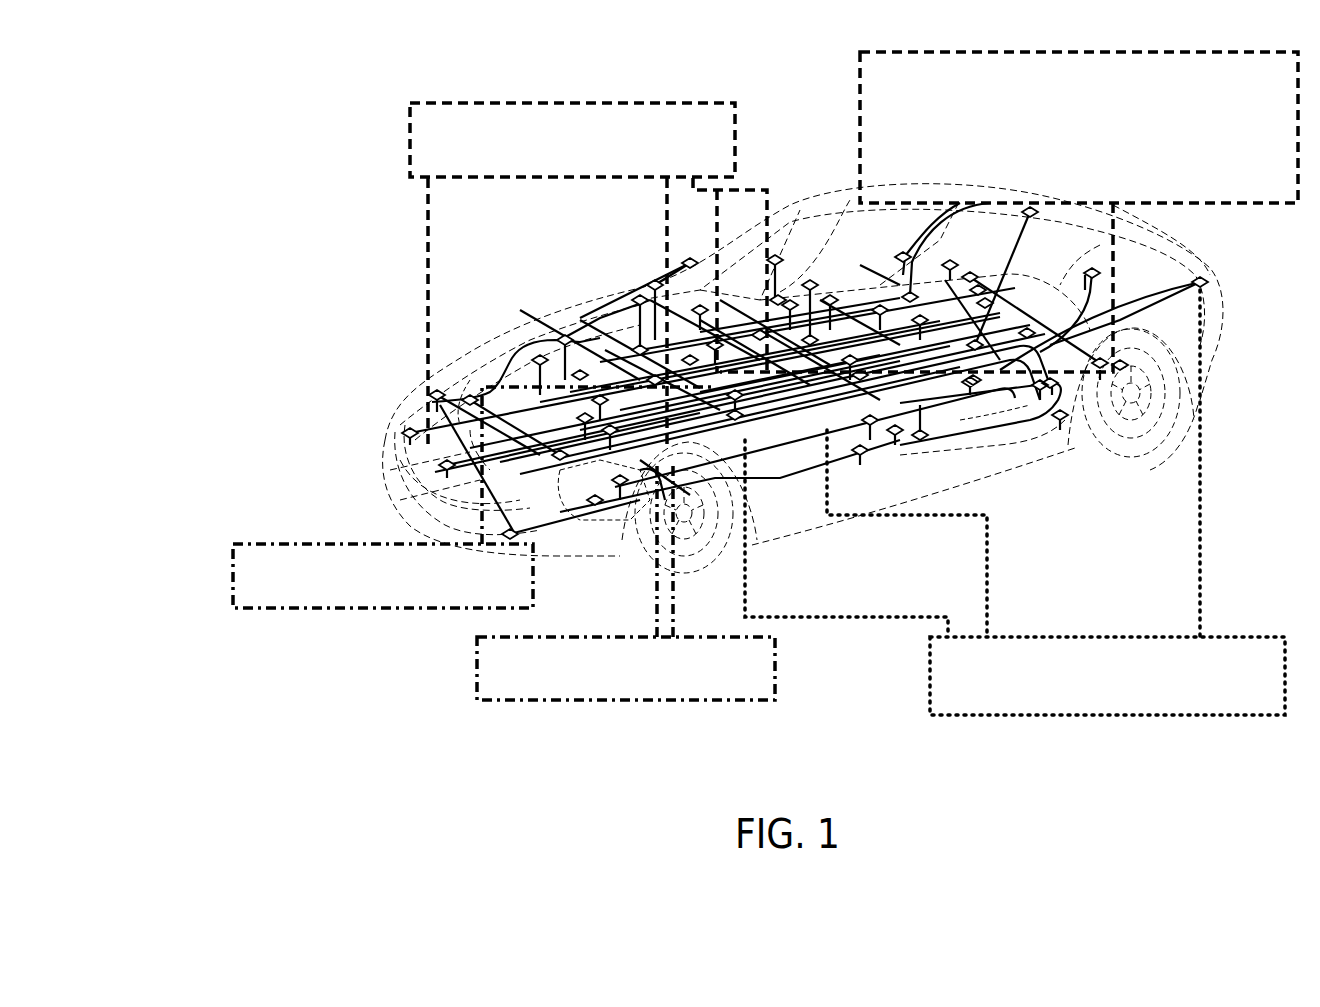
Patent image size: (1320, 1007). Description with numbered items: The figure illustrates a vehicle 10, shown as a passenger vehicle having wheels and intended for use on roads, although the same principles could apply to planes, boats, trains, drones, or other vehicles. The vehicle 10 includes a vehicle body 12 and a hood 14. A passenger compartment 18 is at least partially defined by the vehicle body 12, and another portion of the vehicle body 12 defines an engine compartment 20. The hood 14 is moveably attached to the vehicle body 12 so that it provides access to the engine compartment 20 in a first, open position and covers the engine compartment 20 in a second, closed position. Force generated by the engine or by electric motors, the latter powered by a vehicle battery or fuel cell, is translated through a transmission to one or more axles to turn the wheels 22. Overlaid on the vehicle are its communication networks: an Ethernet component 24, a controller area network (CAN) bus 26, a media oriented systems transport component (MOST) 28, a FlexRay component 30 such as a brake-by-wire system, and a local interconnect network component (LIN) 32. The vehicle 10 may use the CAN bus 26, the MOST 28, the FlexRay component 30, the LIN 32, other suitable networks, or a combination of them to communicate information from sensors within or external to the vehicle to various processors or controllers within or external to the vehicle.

The vehicle 10 is at (207, 190).
The vehicle body 12 is at (767, 305).
The hood 14 is at (515, 332).
The passenger compartment 18 is at (685, 268).
The engine compartment 20 is at (370, 388).
The wheels 22 is at (638, 545).
The Ethernet component 24 is at (208, 574).
The controller area network (CAN) bus 26 is at (392, 134).
The media oriented systems transport component (MOST) 28 is at (843, 117).
The FlexRay component 30 is at (448, 666).
The local interconnect network component (LIN) 32 is at (912, 666).